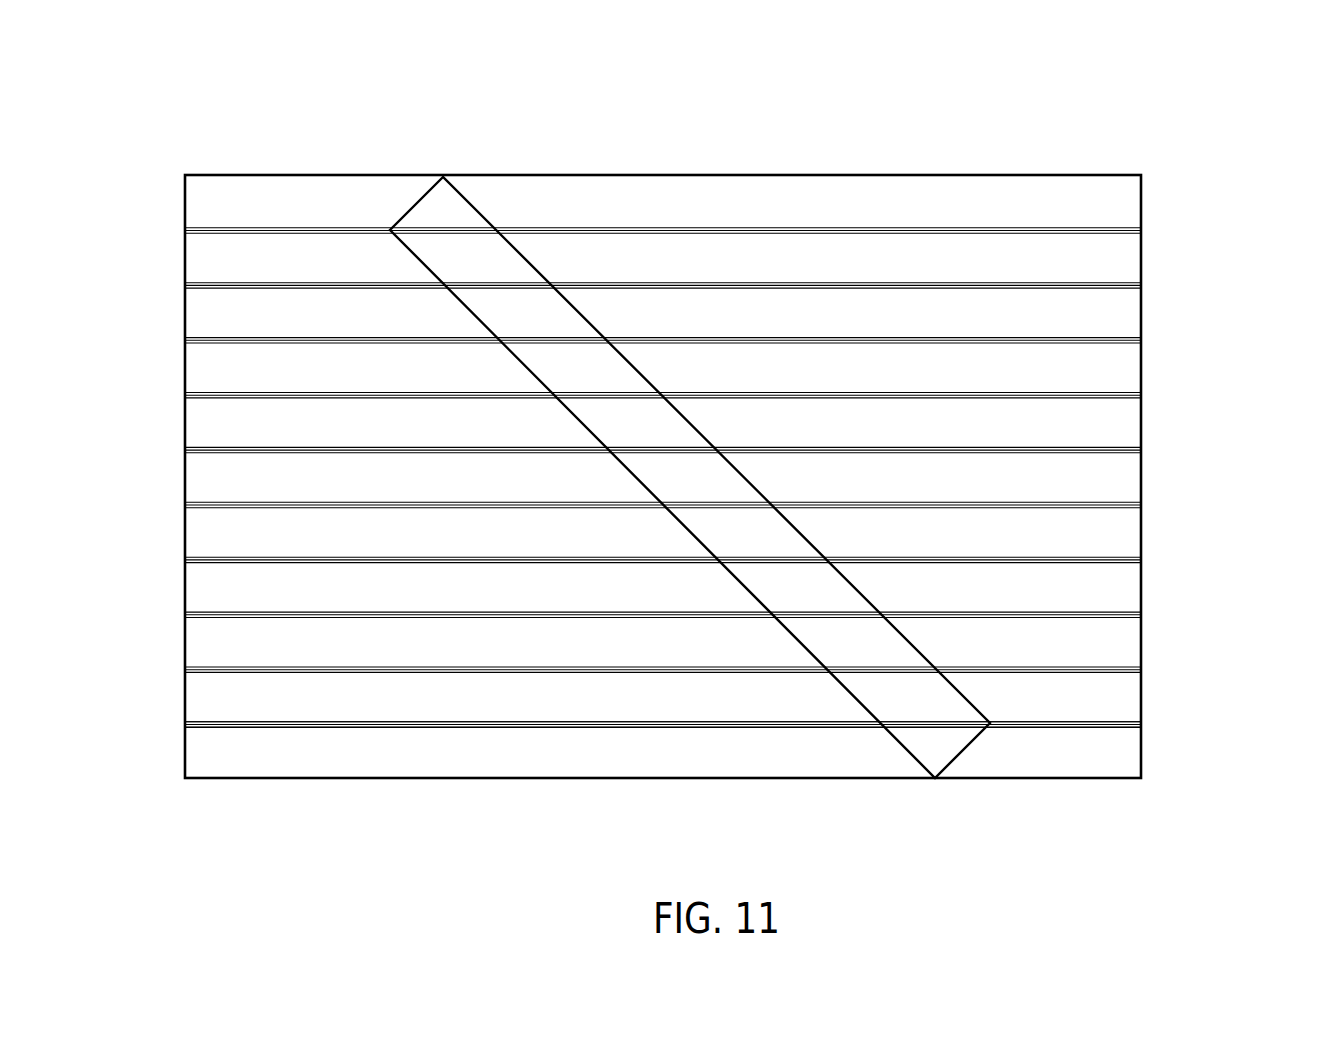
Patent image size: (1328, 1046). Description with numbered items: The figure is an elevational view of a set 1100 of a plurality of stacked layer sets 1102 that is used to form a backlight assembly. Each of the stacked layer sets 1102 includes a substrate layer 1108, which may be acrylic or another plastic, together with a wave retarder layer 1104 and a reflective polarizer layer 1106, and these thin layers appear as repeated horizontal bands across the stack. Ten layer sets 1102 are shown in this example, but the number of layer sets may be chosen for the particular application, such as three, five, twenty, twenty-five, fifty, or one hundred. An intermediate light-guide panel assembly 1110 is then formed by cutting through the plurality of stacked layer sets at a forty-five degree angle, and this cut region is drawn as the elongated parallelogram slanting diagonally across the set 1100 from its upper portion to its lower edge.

The set of stacked layer sets 1100 is at (701, 449).
The stacked layer set 1102 is at (178, 722).
The wave retarder layer 1104 is at (1138, 727).
The reflective polarizer layer 1106 is at (1138, 719).
The substrate layer 1108 is at (1095, 762).
The intermediate light-guide panel assembly 1110 is at (472, 202).